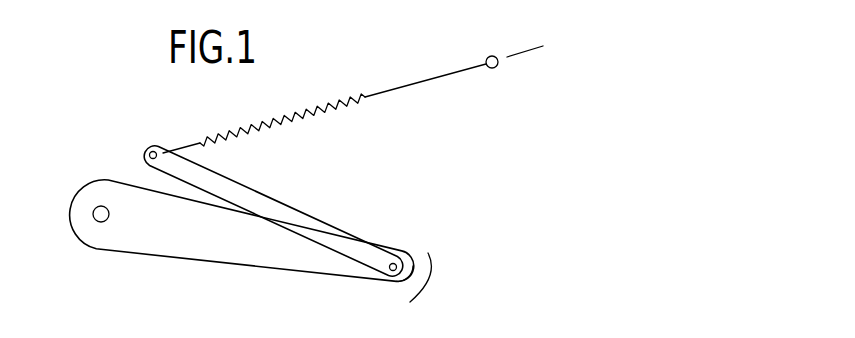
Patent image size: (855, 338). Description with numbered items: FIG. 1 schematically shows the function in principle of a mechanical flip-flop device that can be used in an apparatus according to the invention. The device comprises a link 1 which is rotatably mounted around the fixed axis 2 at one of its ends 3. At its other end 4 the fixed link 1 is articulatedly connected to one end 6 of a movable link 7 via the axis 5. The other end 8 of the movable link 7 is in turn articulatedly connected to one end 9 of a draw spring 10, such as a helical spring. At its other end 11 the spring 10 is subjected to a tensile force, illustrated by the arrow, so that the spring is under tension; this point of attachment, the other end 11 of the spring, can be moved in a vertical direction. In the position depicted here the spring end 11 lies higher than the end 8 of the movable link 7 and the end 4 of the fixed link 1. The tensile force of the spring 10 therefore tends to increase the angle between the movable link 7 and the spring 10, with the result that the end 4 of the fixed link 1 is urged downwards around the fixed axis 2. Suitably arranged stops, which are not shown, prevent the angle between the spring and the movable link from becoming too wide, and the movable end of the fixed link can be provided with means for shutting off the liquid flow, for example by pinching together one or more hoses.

The link 1 is at (204, 252).
The fixed axis 2 is at (93, 216).
The end of link 3 is at (67, 208).
The other end of link 4 is at (393, 287).
The axis 5 is at (392, 249).
The end of movable link 6 is at (409, 254).
The movable link 7 is at (258, 193).
The other end of movable link 8 is at (146, 152).
The end of draw spring 9 is at (185, 146).
The draw spring 10 is at (290, 117).
The other end of spring 11 is at (488, 57).